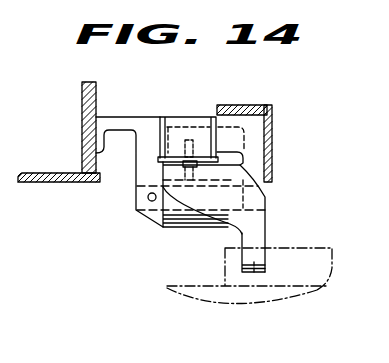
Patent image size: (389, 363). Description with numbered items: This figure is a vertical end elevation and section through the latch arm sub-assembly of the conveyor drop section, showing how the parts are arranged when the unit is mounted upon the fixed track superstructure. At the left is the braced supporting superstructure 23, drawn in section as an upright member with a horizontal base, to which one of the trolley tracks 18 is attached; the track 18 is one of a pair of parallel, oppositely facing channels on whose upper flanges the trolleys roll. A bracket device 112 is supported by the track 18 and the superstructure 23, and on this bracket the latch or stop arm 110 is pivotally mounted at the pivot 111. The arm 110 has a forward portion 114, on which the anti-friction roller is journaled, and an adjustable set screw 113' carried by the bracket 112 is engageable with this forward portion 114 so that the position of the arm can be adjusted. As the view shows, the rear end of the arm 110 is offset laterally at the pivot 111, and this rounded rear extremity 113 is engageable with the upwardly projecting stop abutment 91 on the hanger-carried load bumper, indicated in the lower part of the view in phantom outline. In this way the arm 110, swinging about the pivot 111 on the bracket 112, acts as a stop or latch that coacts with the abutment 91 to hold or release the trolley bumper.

The supporting superstructure 23 is at (80, 125).
The bracket device 112 is at (145, 171).
The forward portion of the arm 114 is at (161, 117).
The adjustable set screw 113' is at (233, 117).
The track 18 is at (269, 136).
The pivot 111 is at (267, 198).
The latch or stop arm 110 is at (200, 202).
The stop abutment 91 is at (290, 257).
The rounded rear extremity 113 is at (260, 299).